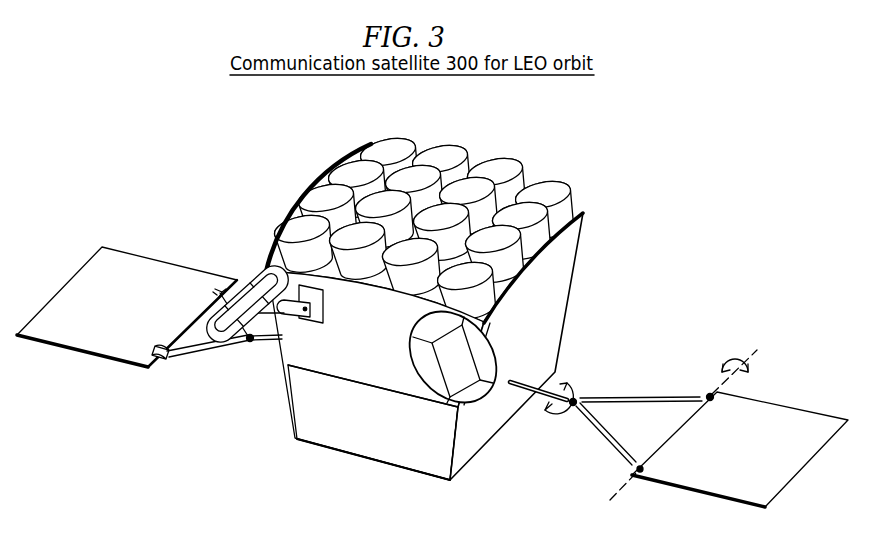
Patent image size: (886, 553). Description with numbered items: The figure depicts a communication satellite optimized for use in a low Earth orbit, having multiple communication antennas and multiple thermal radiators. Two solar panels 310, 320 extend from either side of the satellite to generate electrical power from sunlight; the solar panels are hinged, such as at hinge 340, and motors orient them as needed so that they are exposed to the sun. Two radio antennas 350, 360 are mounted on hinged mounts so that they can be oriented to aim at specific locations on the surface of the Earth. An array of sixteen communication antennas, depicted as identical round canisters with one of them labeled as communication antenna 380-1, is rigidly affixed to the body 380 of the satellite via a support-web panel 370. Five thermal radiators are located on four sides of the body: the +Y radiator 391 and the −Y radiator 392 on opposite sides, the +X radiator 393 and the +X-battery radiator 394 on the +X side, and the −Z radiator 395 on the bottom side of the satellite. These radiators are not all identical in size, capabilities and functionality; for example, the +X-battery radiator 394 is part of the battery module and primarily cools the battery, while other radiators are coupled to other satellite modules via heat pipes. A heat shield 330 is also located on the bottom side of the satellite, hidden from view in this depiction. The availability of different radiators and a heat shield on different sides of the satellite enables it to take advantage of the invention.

The solar panel 310 is at (142, 270).
The solar panel 320 is at (650, 474).
The heat shield 330 is at (575, 303).
The hinge 340 is at (711, 392).
The radio antenna 350 is at (299, 321).
The radio antenna 360 is at (414, 355).
The support-web panel 370 is at (423, 219).
The body 380 is at (285, 353).
The communication antenna 380-1 is at (437, 150).
The +Y radiator 391 is at (563, 273).
The −Y radiator 392 is at (281, 202).
The +X radiator 393 is at (360, 350).
The +X-battery radiator 394 is at (370, 432).
The −Z radiator 395 is at (417, 473).